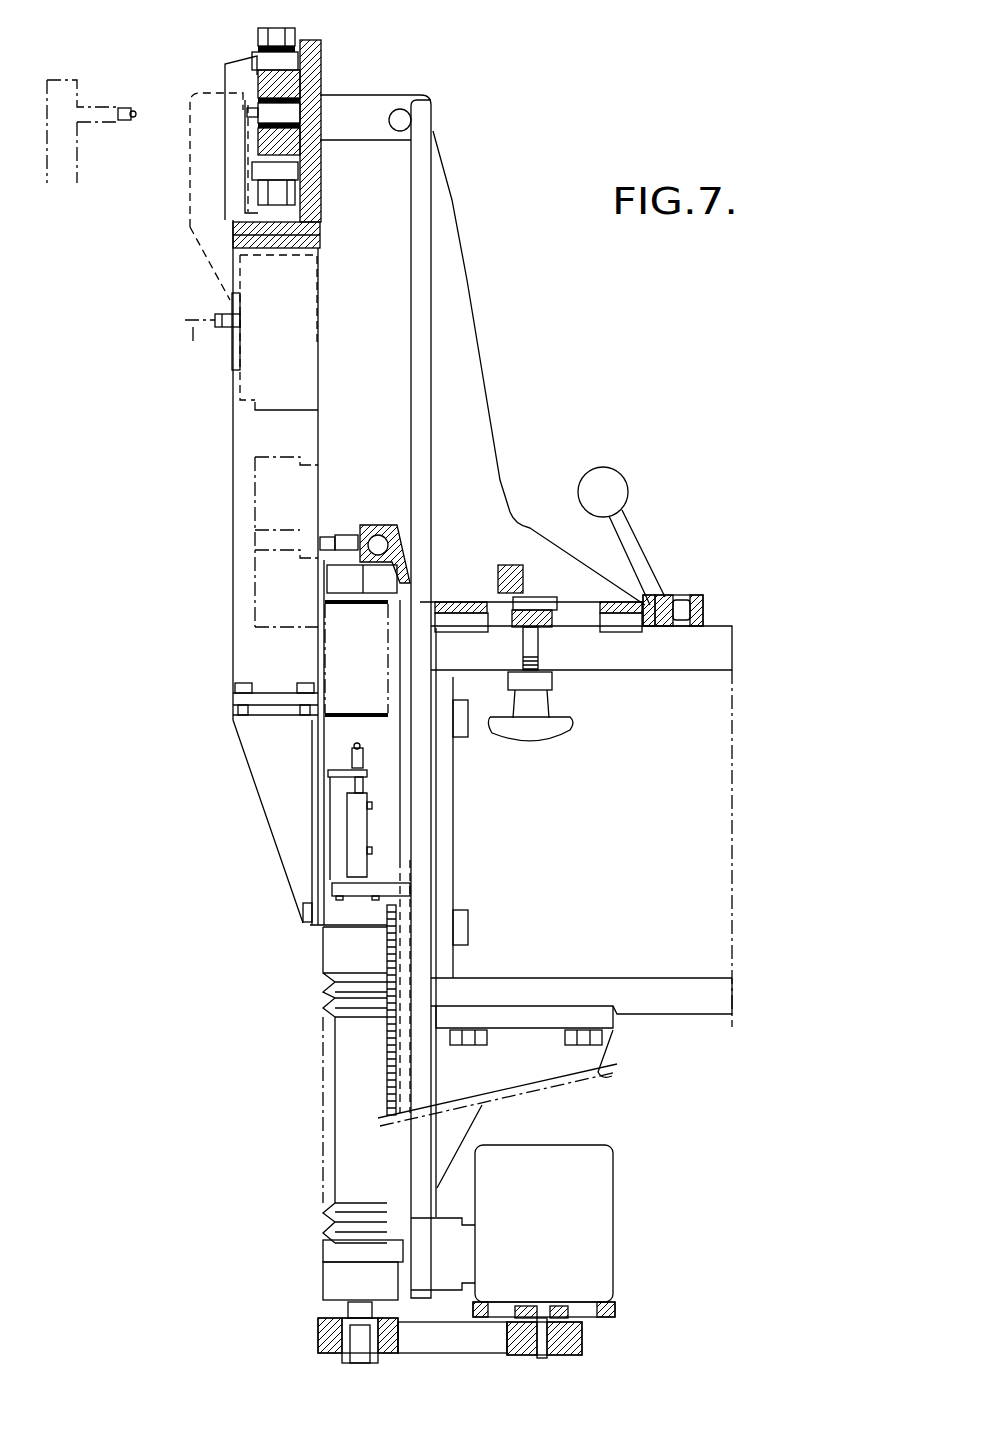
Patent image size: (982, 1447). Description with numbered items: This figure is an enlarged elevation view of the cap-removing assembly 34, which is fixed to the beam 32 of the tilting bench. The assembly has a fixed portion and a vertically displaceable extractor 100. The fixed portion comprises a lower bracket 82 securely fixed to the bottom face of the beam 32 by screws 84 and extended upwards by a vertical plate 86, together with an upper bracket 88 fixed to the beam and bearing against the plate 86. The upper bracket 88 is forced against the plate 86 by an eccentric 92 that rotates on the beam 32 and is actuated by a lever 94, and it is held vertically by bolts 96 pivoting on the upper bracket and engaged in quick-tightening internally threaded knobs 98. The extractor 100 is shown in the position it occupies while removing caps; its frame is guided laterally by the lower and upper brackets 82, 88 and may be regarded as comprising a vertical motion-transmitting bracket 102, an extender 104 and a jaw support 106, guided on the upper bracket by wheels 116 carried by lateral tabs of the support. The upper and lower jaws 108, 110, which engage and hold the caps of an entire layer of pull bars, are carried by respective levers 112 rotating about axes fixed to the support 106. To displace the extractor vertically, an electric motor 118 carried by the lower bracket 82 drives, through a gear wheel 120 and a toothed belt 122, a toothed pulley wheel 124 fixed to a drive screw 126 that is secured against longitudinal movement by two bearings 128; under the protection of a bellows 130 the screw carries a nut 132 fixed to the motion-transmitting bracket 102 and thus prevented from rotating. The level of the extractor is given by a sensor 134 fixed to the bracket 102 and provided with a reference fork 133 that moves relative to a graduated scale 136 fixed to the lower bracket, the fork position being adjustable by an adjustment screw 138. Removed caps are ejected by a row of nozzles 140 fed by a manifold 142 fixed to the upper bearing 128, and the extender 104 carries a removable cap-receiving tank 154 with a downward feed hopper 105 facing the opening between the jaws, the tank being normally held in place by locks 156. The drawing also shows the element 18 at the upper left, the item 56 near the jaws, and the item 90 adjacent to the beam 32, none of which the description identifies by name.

The workpiece holder 18 is at (96, 106).
The beam 32 is at (682, 852).
The cap-removing assembly 34 is at (520, 382).
The shaft 56 is at (250, 114).
The lower bracket 82 is at (530, 1067).
The screws 84 is at (585, 1040).
The vertical plate 86 is at (408, 822).
The upper bracket 88 is at (422, 339).
The platform 90 is at (627, 625).
The eccentric 92 is at (705, 612).
The lever 94 is at (623, 540).
The bolts 96 is at (530, 633).
The quick-tightening internally threaded knobs 98 is at (537, 727).
The extractor 100 is at (208, 203).
The motion-transmitting bracket 102 is at (293, 837).
The extender 104 is at (273, 368).
The feed hopper 105 is at (190, 180).
The jaw support 106 is at (472, 258).
The upper jaw 108 is at (258, 83).
The lower jaw 110 is at (321, 142).
The levers 112 is at (472, 223).
The wheels 116 is at (402, 109).
The electric motor 118 is at (587, 1225).
The gear wheel 120 is at (582, 1342).
The toothed belt 122 is at (457, 1337).
The toothed pulley wheel 124 is at (323, 1337).
The drive screw 126 is at (353, 1308).
The bearings 128 is at (343, 1275).
The bellows 130 is at (332, 1215).
The nut 132 is at (343, 960).
The reference fork 133 is at (400, 890).
The sensor 134 is at (357, 782).
The graduated scale 136 is at (390, 1043).
The adjustment screw 138 is at (352, 755).
The nozzles 140 is at (347, 540).
The manifold 142 is at (382, 528).
The cap-receiving tank 154 is at (260, 280).
The locks 156 is at (206, 346).